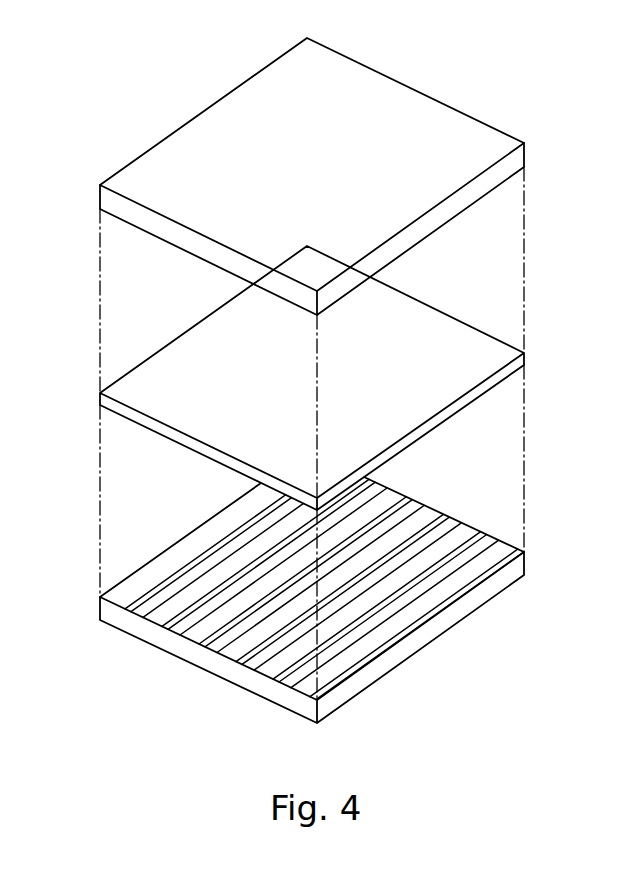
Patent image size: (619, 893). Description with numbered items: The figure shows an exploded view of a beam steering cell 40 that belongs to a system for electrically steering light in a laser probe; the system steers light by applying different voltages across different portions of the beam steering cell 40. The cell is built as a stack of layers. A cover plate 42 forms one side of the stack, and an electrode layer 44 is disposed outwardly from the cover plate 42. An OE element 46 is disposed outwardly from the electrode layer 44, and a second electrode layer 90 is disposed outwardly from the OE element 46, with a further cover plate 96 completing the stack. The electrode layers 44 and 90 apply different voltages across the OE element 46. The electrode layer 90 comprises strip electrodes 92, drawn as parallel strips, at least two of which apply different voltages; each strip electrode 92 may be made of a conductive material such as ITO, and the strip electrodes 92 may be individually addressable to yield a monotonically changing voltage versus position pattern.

The beam steering cell 40 is at (300, 380).
The cover plate 42 is at (316, 176).
The electrode layer 44 is at (402, 255).
The OE element 46 is at (197, 325).
The electrode layer 90 is at (303, 592).
The strip electrodes 92 is at (237, 528).
The cover plate 96 is at (393, 672).